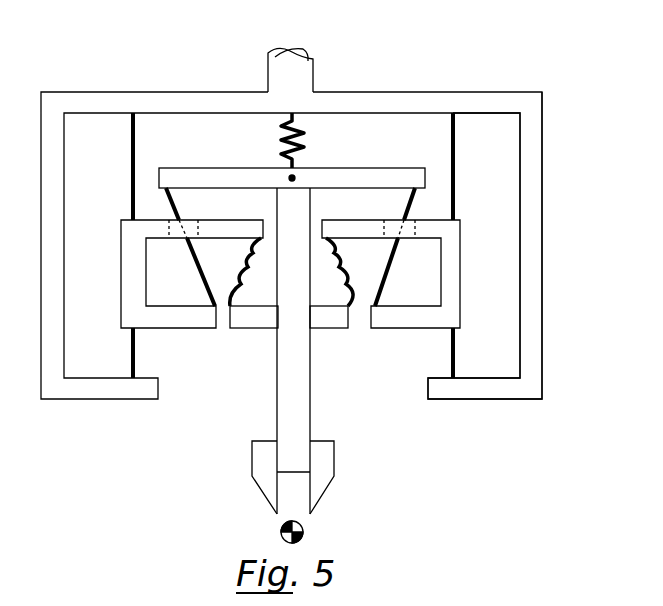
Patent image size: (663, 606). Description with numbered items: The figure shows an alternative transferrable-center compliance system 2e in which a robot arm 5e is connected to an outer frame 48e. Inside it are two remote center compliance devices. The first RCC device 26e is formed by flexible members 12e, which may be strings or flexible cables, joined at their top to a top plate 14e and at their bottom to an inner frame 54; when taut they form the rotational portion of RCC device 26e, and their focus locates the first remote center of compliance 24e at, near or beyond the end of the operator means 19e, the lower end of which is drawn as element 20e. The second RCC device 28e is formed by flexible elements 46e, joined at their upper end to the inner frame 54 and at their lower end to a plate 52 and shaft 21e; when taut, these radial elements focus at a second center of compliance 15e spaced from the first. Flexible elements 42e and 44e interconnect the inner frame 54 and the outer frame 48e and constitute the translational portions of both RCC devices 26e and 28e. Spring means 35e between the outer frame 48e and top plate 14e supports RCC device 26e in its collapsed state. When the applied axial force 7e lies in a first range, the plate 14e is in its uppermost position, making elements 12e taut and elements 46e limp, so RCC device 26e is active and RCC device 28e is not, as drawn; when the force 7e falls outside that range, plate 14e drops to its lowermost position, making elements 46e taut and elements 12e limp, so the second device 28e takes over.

The transferrable-center compliance system 2e is at (422, 28).
The robot arm 5e is at (312, 62).
The applied axial force 7e is at (366, 417).
The flexible members 12e is at (170, 196).
The top plate 14e is at (375, 167).
The second center of compliance 15e is at (289, 177).
The operator means 19e is at (238, 443).
The tool tip holder 20e is at (317, 440).
The shaft 21e is at (307, 396).
The remote center of compliance 24e is at (300, 527).
The RCC device 26e is at (400, 275).
The second RCC device 28e is at (365, 272).
The spring means 35e is at (302, 143).
The flexible elements 42e is at (131, 343).
The flexible elements 44e is at (131, 153).
The flexible elements 46e is at (240, 271).
The outer frame 48e is at (540, 133).
The plate 52 is at (317, 327).
The inner frame 54 is at (118, 266).